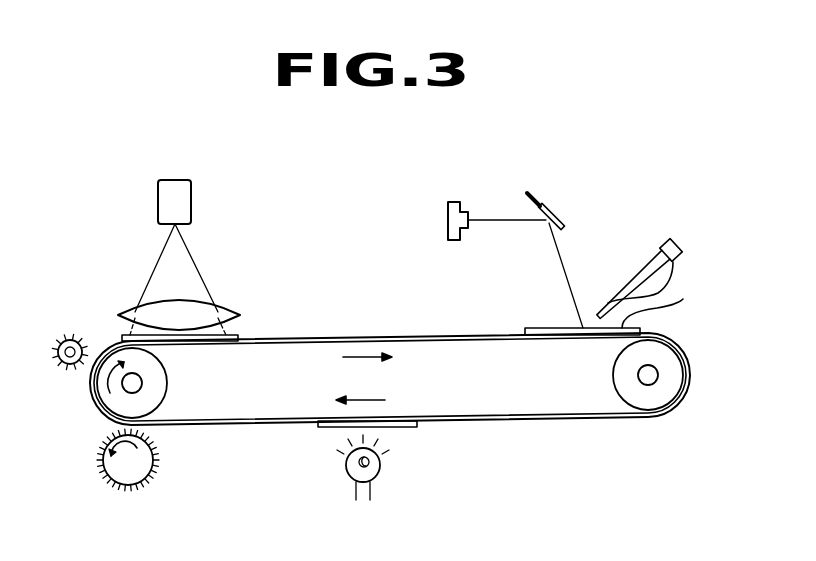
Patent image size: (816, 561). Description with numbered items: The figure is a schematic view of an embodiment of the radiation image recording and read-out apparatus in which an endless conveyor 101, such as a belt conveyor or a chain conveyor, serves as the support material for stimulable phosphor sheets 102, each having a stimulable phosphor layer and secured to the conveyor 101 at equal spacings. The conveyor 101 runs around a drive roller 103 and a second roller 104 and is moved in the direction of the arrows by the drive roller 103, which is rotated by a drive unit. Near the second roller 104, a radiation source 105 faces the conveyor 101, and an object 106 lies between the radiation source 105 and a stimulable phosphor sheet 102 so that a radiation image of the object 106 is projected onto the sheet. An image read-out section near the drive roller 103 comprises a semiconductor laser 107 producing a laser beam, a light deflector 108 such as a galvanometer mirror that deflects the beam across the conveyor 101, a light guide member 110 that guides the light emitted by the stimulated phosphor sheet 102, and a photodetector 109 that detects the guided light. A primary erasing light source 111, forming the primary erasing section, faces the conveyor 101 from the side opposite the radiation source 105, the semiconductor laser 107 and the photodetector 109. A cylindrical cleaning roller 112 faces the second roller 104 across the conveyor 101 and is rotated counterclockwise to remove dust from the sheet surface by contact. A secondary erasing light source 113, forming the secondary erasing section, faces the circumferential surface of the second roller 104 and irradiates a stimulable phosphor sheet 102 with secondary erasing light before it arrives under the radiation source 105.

The endless conveyor 101 is at (383, 341).
The stimulable phosphor sheet 102 is at (239, 335).
The drive roller 103 is at (643, 357).
The second roller 104 is at (117, 409).
The radiation source 105 is at (192, 196).
The object 106 is at (222, 305).
The semiconductor laser 107 is at (456, 202).
The light deflector 108 is at (561, 215).
The photodetector 109 is at (679, 240).
The light guide member 110 is at (627, 283).
The primary erasing light source 111 is at (340, 472).
The cleaning roller 112 is at (145, 486).
The secondary erasing light source 113 is at (73, 337).